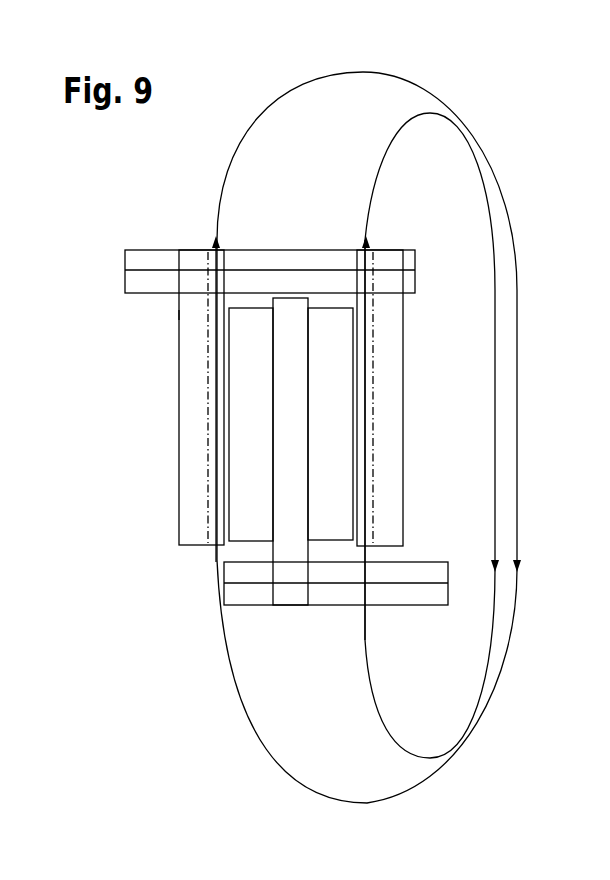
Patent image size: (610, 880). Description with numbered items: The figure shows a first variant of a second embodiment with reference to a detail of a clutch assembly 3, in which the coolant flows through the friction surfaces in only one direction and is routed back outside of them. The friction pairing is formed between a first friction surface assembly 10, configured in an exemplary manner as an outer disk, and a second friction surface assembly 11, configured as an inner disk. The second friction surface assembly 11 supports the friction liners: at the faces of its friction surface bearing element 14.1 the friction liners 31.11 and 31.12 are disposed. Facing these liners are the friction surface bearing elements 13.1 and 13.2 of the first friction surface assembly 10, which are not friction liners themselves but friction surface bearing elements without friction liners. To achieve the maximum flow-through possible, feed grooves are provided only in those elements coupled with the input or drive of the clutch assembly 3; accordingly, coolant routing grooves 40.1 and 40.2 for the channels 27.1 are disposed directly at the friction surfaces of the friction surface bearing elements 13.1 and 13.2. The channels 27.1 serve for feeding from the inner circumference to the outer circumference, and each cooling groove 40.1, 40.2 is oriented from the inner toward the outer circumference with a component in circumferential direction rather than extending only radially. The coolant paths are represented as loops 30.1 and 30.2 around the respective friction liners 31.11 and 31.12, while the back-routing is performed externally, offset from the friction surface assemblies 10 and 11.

The clutch assembly 3 is at (186, 245).
The first friction surface assembly 10 is at (170, 312).
The second friction surface assembly 11 is at (278, 626).
The friction surface bearing element 13.1 is at (198, 423).
The friction surface bearing element 13.2 is at (387, 427).
The friction surface bearing element 14.1 is at (293, 594).
The cooling channel 27.1 is at (216, 472).
The coolant loop 30.1 is at (250, 722).
The coolant loop 30.2 is at (487, 682).
The friction liner 31.11 is at (245, 351).
The friction liner 31.12 is at (337, 351).
The coolant routing groove 40.1 is at (210, 520).
The coolant routing groove 40.2 is at (367, 522).